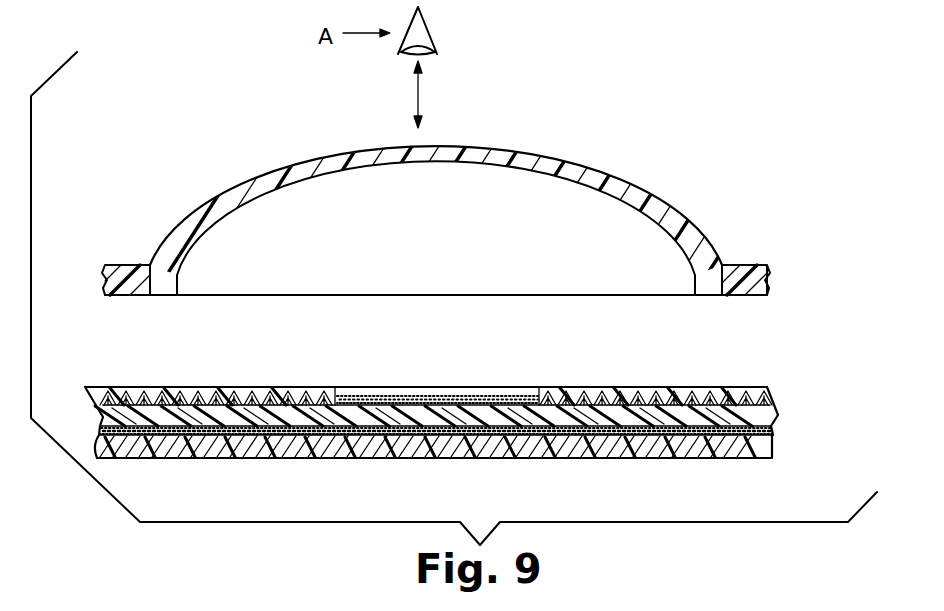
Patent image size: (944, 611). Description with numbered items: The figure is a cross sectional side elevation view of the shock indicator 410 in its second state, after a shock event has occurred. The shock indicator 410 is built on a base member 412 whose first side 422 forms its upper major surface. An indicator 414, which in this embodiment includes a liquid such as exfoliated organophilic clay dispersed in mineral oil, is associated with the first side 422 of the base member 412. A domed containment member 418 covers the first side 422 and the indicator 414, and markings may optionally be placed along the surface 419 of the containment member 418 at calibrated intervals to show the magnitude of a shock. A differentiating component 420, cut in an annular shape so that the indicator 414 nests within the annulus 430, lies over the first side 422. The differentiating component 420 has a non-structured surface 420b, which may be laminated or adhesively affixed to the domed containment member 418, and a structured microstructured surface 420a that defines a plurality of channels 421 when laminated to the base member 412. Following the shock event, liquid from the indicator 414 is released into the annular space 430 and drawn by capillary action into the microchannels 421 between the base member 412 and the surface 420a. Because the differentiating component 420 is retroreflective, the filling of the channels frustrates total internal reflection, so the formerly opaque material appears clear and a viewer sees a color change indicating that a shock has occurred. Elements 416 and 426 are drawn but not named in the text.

The shock indicator 410 is at (617, 113).
The domed containment member 418 is at (448, 147).
The surface of the containment member 419 is at (131, 265).
The base member 412 is at (103, 417).
The differentiating component 420 is at (776, 390).
The structured surface 420a is at (623, 410).
The non-structured surface 420b is at (656, 387).
The channels 421 is at (315, 410).
The annulus 430 is at (376, 396).
The indicator 414 is at (437, 398).
The first side 422 is at (487, 402).
The adhesive layer 416 is at (771, 428).
The backing substrate layer 426 is at (766, 448).